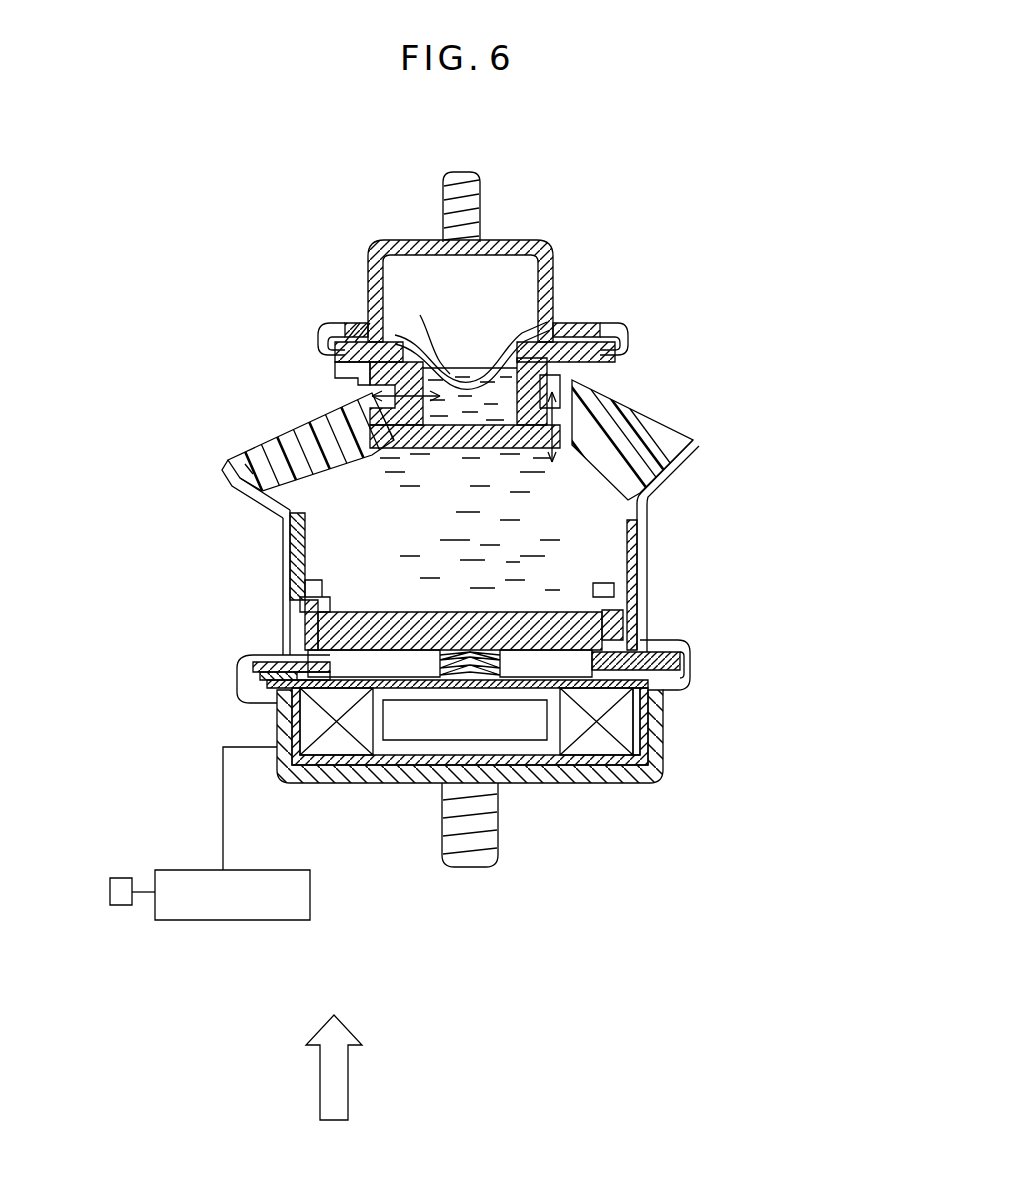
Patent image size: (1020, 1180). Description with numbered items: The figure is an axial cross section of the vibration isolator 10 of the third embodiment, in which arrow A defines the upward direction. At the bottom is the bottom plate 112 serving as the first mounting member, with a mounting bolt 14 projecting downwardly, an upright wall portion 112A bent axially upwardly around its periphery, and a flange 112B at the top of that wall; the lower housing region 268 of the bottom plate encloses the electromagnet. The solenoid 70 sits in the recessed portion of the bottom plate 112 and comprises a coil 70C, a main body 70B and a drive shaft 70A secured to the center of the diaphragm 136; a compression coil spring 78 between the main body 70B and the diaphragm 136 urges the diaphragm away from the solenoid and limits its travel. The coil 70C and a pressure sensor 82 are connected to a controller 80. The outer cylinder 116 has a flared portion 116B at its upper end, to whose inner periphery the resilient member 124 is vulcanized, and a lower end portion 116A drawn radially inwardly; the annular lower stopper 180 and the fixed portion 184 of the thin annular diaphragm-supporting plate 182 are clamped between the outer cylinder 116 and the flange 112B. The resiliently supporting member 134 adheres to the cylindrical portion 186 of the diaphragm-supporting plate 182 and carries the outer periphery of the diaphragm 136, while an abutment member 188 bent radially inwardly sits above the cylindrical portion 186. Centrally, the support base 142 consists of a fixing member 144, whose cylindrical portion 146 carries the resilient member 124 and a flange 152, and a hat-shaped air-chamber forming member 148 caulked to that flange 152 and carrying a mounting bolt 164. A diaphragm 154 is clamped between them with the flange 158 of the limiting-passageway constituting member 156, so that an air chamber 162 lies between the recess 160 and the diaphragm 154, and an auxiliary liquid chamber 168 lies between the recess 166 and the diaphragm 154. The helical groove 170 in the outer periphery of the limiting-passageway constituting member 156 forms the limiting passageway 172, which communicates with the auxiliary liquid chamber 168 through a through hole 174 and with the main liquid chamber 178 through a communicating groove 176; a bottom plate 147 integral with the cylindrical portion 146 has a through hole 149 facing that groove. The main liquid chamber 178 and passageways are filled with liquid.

The vibration isolator 10 is at (655, 172).
The mounting bolt 14 is at (440, 848).
The solenoid 70 is at (612, 772).
The drive shaft 70A is at (424, 760).
The main body 70B is at (580, 785).
The coil 70C is at (337, 784).
The compression coil spring 78 is at (448, 645).
The controller 80 is at (226, 920).
The pressure sensor 82 is at (302, 582).
The bottom plate 112 is at (552, 782).
The upright wall portion 112A is at (656, 740).
The flange 112B is at (658, 700).
The outer cylinder 116 is at (650, 576).
The lower end portion 116A is at (252, 698).
The flared portion 116B is at (696, 450).
The resilient member 124 is at (262, 480).
The resiliently supporting member 134 is at (322, 612).
The diaphragm 136 is at (532, 615).
The support base 142 is at (308, 338).
The fixing member 144 is at (612, 355).
The cylindrical portion 146 is at (262, 430).
The bottom plate 147 is at (525, 490).
The air-chamber forming member 148 is at (366, 274).
The through hole 149 is at (552, 462).
The flange 152 is at (334, 372).
The diaphragm 154 is at (344, 318).
The limiting-passageway constituting member 156 is at (590, 322).
The flange 158 is at (604, 340).
The recess 160 is at (499, 287).
The air chamber 162 is at (435, 297).
The mounting bolt 164 is at (481, 204).
The recess 166 is at (463, 370).
The auxiliary liquid chamber 168 is at (372, 302).
The helical groove 170 is at (592, 397).
The limiting passageway 172 is at (340, 395).
The through hole 174 is at (398, 460).
The communicating groove 176 is at (530, 462).
The main liquid chamber 178 is at (468, 580).
The lower stopper 180 is at (655, 638).
The diaphragm-supporting plate 182 is at (618, 582).
The fixed portion 184 is at (694, 672).
The cylindrical portion 186 is at (650, 604).
The abutment member 188 is at (596, 600).
The housing 268 is at (660, 745).
The arrow A is at (349, 1064).